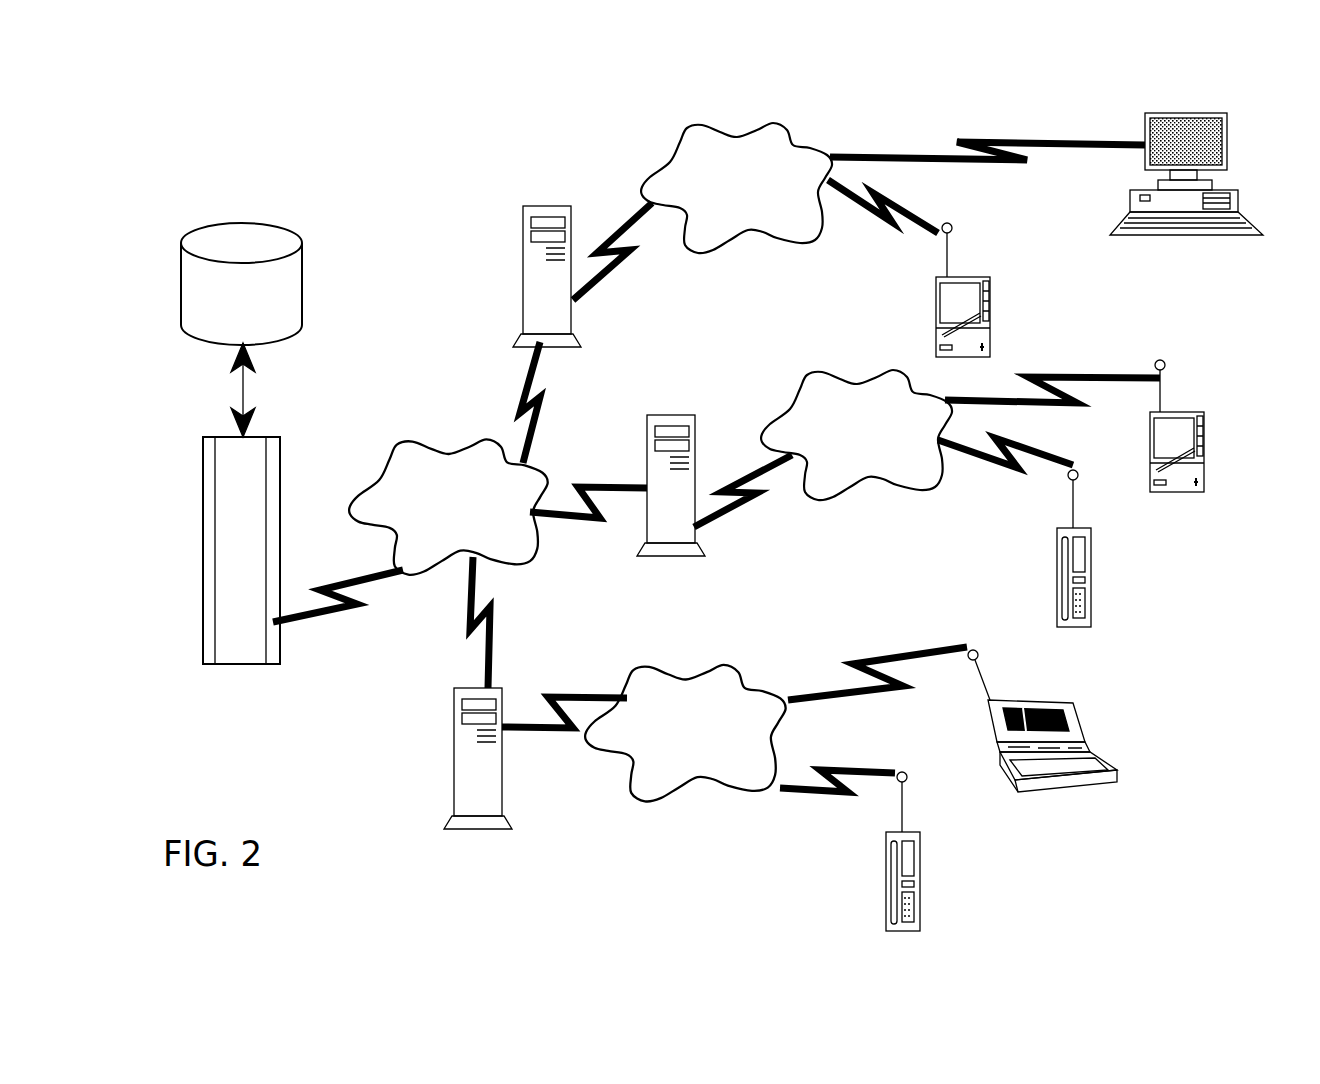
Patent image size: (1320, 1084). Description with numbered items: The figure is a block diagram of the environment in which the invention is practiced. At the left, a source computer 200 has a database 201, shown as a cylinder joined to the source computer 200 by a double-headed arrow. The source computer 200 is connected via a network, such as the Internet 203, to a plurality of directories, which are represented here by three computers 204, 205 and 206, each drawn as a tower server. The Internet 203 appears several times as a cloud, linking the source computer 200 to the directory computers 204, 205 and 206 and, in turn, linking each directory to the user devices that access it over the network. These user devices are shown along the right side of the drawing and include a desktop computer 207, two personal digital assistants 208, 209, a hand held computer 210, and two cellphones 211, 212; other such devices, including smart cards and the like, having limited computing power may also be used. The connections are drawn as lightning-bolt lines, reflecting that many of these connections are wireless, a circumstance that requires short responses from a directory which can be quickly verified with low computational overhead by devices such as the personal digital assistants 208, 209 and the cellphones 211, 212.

The source computer 200 is at (202, 622).
The database 201 is at (221, 222).
The Internet 203 is at (747, 132).
The directory computer 204 is at (545, 205).
The directory computer 205 is at (678, 412).
The directory computer 206 is at (454, 732).
The desktop computer 207 is at (1175, 112).
The personal digital assistant 208 is at (992, 315).
The personal digital assistant 209 is at (1203, 455).
The hand held computer 210 is at (1107, 757).
The cellphone 211 is at (1091, 597).
The cellphone 212 is at (913, 887).